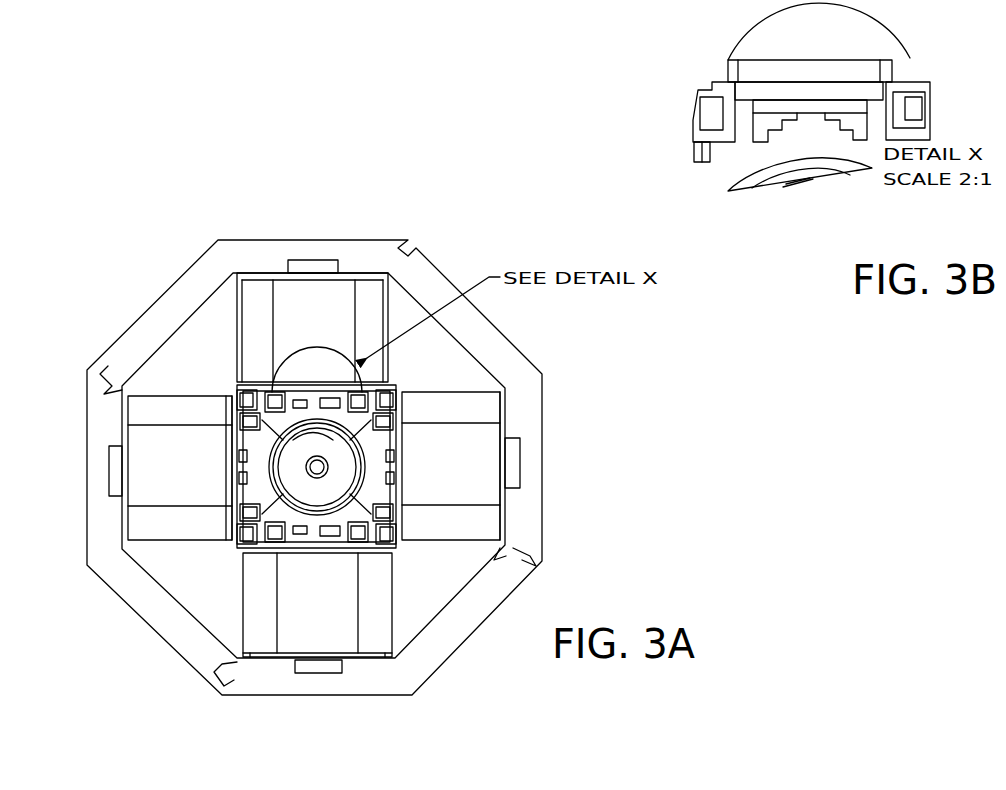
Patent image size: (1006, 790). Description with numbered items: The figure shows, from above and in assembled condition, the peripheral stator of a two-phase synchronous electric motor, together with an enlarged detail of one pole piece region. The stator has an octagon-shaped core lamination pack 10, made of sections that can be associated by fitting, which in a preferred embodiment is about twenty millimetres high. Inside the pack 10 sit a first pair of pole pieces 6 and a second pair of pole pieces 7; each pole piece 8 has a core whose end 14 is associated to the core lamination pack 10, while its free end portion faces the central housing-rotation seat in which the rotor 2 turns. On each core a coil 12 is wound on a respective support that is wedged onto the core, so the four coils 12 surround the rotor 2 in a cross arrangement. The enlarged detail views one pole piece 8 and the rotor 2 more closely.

In FIG. 3B, the rotor 2 is at (777, 180).
In FIG. 3A, the first pair of pole pieces 6 is at (240, 460).
In FIG. 3A, the second pair of pole pieces 7 is at (313, 405).
In FIG. 3B, the pole piece 8 is at (803, 125).
In FIG. 3A, the core lamination pack 10 is at (525, 393).
In FIG. 3A, the coil 12 is at (452, 478).
In FIG. 3A, the end of the core 14 is at (517, 460).